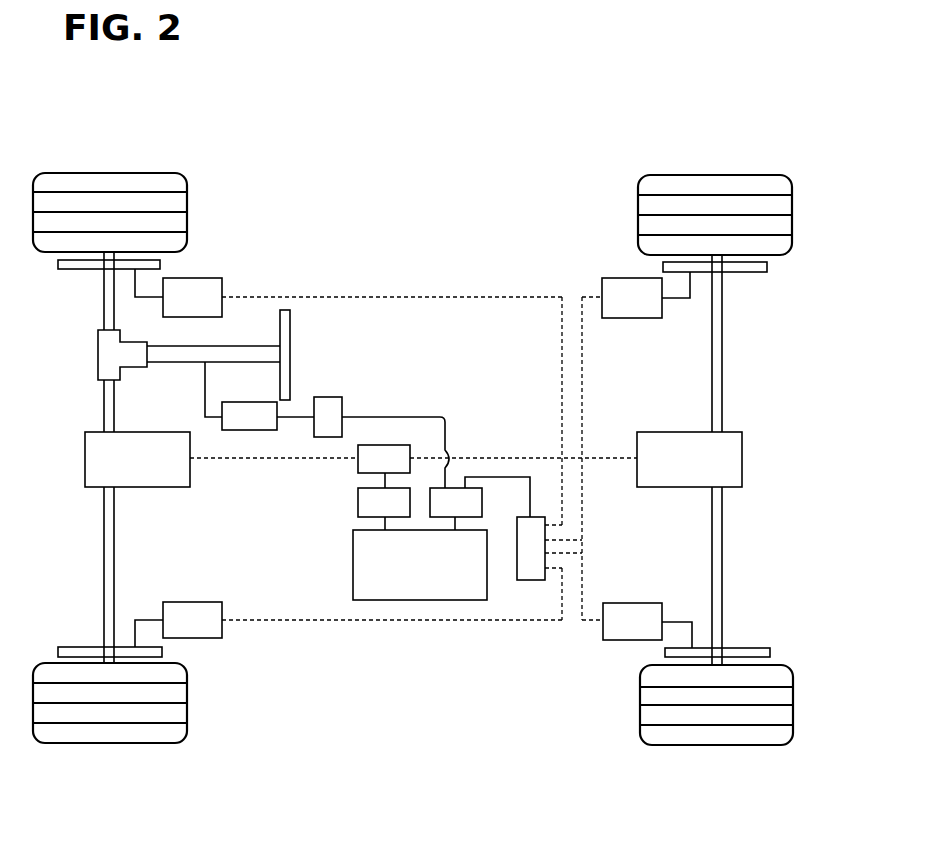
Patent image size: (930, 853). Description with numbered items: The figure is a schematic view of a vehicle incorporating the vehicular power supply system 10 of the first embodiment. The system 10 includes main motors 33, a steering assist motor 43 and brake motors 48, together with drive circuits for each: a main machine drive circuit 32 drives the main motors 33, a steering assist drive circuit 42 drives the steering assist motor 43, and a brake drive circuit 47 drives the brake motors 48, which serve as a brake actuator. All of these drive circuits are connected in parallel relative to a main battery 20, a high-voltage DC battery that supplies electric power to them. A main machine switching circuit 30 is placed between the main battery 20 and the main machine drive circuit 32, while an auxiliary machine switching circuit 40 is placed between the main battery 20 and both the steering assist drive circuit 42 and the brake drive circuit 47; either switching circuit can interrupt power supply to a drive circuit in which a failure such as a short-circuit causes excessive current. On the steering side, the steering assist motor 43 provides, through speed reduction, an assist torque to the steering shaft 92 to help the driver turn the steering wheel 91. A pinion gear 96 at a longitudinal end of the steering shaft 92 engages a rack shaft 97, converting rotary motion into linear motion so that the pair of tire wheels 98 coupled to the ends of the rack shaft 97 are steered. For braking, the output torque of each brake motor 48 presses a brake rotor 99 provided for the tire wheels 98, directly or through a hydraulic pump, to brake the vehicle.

The vehicular power supply system 10 is at (448, 405).
The main battery 20 is at (413, 600).
The main machine switching circuit 30 is at (358, 503).
The main machine drive circuit 32 is at (384, 445).
The main motor 33 is at (165, 488).
The auxiliary machine switching circuit 40 is at (482, 503).
The steering assist drive circuit 42 is at (330, 397).
The steering assist motor 43 is at (250, 430).
The brake drive circuit 47 is at (532, 580).
The brake motor 48 is at (210, 278).
The steering wheel 91 is at (290, 328).
The steering shaft 92 is at (178, 363).
The pinion gear 96 is at (98, 356).
The rack shaft 97 is at (104, 406).
The tire wheel 98 is at (143, 187).
The brake rotor 99 is at (78, 270).